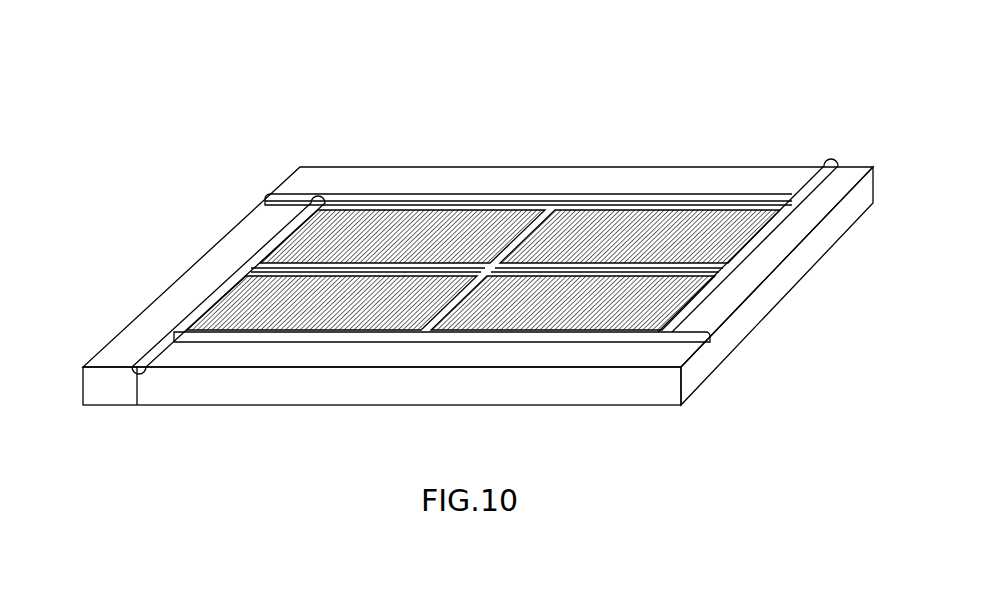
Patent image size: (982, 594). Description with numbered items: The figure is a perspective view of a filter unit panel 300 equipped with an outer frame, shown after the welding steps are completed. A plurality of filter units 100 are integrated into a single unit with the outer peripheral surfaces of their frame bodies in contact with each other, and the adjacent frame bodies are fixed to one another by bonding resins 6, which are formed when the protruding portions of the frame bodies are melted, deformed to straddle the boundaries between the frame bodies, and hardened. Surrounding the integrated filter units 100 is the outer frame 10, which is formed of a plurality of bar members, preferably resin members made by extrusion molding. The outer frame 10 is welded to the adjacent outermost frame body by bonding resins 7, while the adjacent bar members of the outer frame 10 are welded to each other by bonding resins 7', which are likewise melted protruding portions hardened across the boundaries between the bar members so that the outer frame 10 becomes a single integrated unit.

The filter unit panel equipped with the outer frame 300 is at (791, 59).
The outer frame 10 is at (828, 190).
The bonding resin 7 is at (485, 247).
The bonding resin 7' is at (512, 230).
The filter unit 100 is at (483, 219).
The bonding resin 6 is at (460, 297).